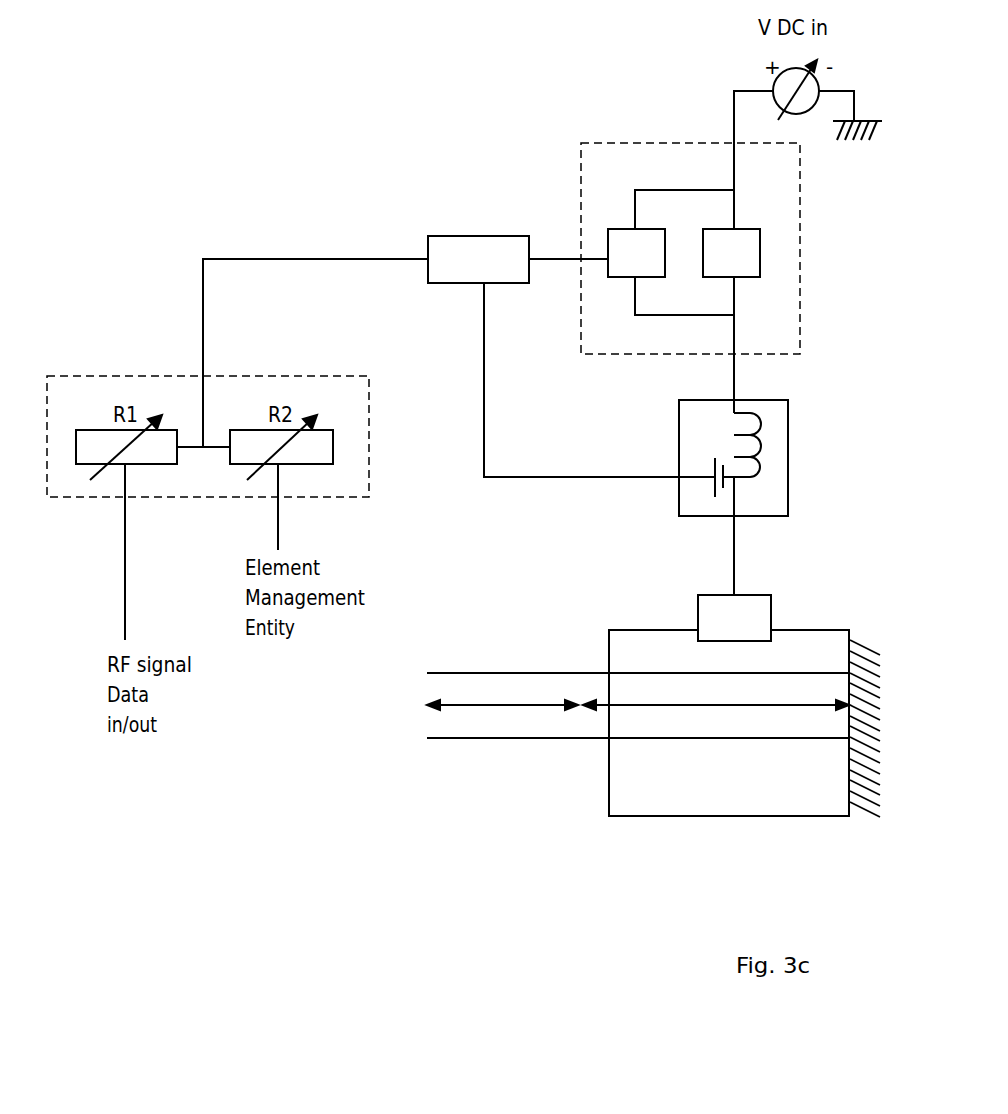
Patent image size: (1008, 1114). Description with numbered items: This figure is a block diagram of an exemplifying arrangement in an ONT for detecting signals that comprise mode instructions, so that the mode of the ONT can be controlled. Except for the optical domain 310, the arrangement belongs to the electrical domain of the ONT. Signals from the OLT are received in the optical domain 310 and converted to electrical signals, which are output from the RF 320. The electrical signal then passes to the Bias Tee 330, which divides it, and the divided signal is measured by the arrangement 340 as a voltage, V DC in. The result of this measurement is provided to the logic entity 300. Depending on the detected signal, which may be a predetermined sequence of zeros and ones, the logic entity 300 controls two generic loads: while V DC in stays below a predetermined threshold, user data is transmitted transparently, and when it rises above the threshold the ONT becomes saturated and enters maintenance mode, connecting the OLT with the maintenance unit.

The logic entity 300 is at (448, 236).
The optical domain 310 is at (658, 667).
The RF 320 is at (745, 595).
The Bias Tee 330 is at (770, 400).
The arrangement 340 is at (805, 280).